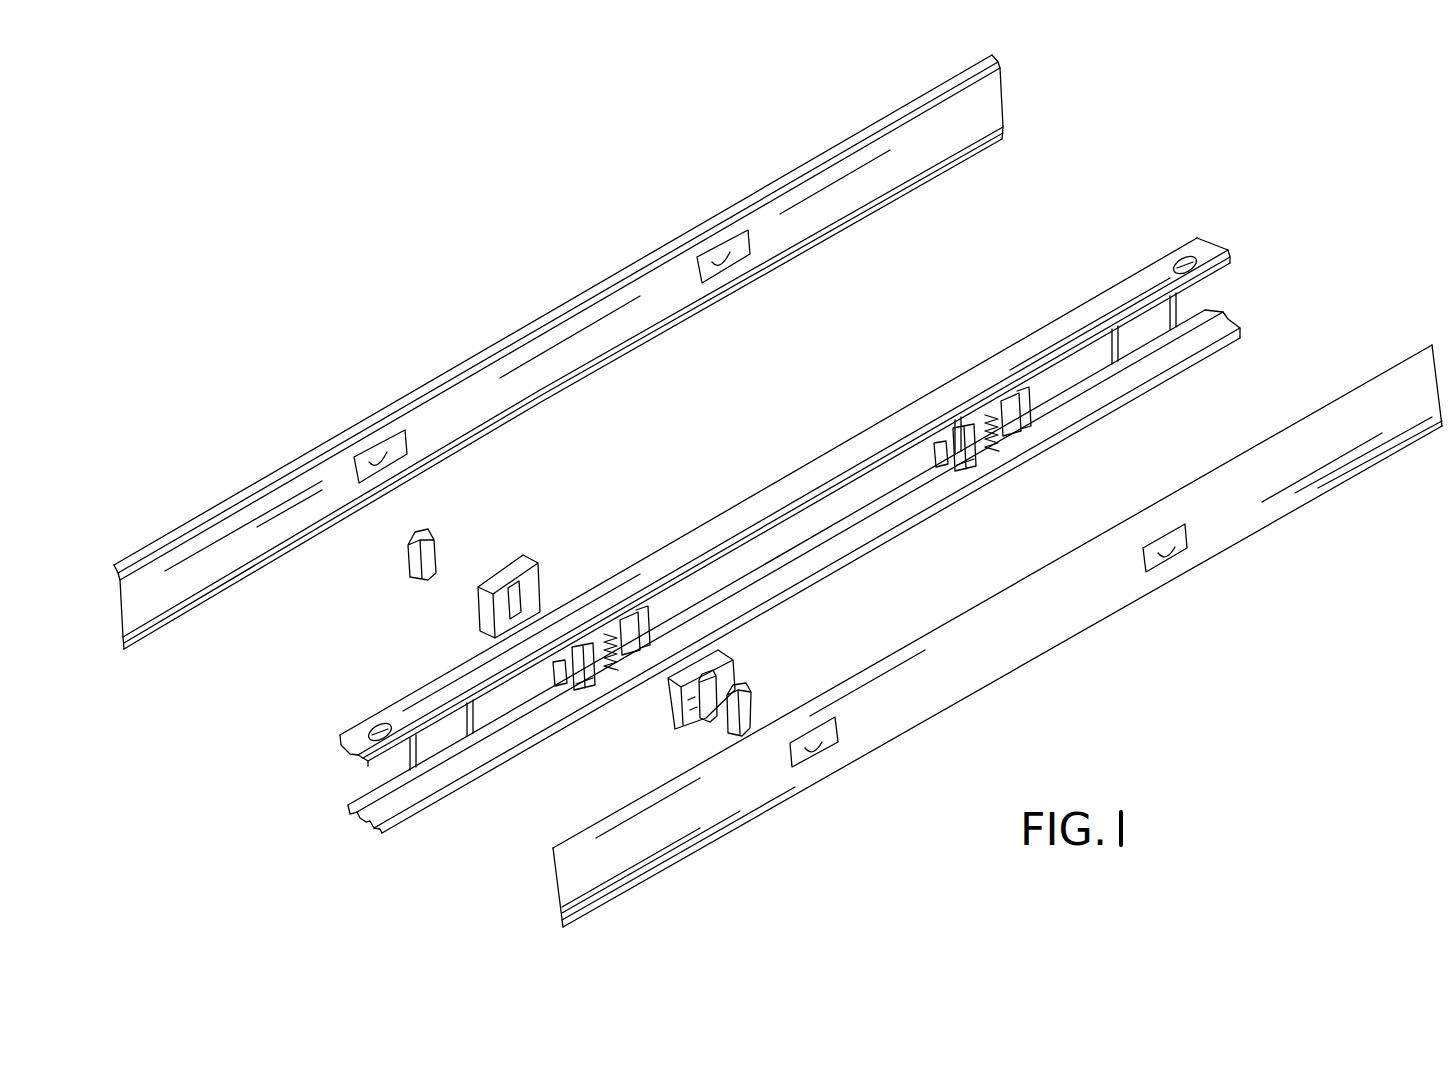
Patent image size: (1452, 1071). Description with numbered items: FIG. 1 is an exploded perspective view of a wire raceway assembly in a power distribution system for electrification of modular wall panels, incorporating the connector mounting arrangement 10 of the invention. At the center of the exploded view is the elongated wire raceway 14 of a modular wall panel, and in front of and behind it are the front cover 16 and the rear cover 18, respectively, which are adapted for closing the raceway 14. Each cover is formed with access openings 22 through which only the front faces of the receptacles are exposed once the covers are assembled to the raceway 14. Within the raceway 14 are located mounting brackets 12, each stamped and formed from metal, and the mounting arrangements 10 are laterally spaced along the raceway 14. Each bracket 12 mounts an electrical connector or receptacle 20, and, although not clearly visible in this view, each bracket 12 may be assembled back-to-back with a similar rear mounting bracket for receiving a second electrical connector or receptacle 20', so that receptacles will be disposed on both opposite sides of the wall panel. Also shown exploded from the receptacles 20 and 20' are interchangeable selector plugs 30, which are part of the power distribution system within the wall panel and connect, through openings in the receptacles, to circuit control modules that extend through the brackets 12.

The connector mounting arrangement 10 is at (650, 703).
The mounting bracket 12 is at (651, 622).
The wire raceway 14 is at (1130, 285).
The front cover 16 is at (1370, 450).
The rear cover 18 is at (978, 113).
The electrical connector or receptacle 20 is at (754, 667).
The second electrical connector or receptacle 20' is at (548, 562).
The access opening 22 is at (735, 243).
The interchangeable selector plug 30 is at (432, 542).